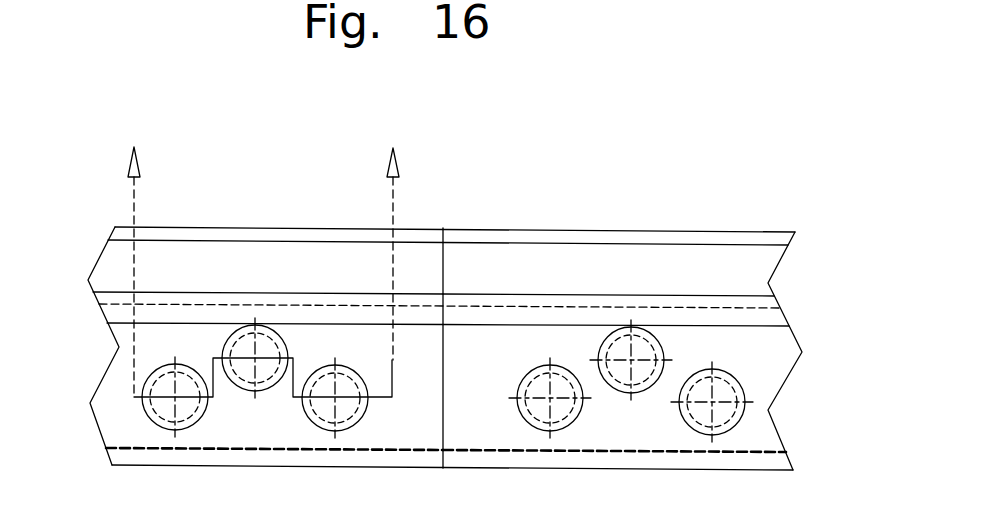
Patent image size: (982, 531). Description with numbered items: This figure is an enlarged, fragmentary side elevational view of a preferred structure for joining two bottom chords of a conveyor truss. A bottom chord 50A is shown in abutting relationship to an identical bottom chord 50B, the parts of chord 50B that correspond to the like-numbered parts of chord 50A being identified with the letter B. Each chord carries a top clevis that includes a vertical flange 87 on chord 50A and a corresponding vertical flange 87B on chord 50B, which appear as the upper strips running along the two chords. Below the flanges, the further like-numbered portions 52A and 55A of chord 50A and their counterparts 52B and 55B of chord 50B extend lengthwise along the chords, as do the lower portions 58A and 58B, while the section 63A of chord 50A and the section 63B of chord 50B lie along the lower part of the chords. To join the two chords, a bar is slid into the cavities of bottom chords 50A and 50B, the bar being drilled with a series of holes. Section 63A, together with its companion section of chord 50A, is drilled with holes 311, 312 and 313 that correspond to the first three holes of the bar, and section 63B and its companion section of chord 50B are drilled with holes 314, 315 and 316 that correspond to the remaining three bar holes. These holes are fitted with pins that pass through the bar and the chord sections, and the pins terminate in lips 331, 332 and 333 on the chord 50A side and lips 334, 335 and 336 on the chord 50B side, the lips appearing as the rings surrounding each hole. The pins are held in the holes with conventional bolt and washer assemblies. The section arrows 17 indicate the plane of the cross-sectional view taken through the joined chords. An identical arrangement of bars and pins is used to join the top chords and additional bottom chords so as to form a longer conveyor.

The section line 17 is at (266, 252).
The bottom chord 50A is at (85, 323).
The bottom chord 50B is at (622, 313).
The vertical flange 87 is at (214, 228).
The vertical flange 87B is at (538, 229).
The conductor layer of first section 52A is at (308, 292).
The conductor layer of second section 52B is at (740, 295).
The dielectric layer of first section 55A is at (110, 323).
The dielectric layer of second section 55B is at (542, 323).
The section 63A is at (110, 421).
The section 63B is at (770, 432).
The bottom edge of first section 58A is at (227, 468).
The bottom edge of second section 58B is at (662, 470).
The hole 311 is at (165, 418).
The hole 312 is at (231, 383).
The hole 313 is at (358, 418).
The hole 314 is at (524, 416).
The hole 315 is at (642, 390).
The hole 316 is at (700, 424).
The lip 331 is at (202, 377).
The lip 332 is at (284, 345).
The lip 333 is at (349, 370).
The lip 334 is at (521, 381).
The lip 335 is at (605, 342).
The lip 336 is at (740, 385).